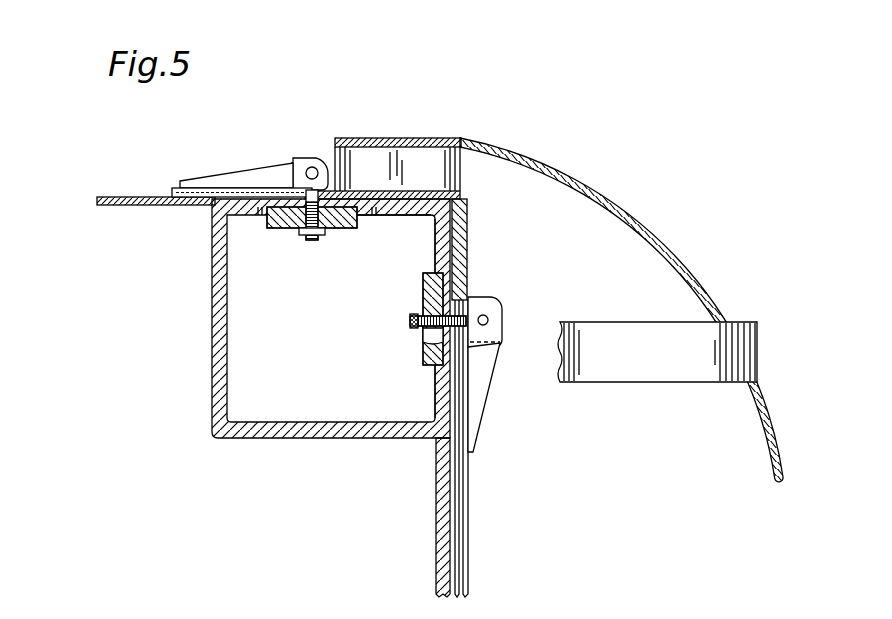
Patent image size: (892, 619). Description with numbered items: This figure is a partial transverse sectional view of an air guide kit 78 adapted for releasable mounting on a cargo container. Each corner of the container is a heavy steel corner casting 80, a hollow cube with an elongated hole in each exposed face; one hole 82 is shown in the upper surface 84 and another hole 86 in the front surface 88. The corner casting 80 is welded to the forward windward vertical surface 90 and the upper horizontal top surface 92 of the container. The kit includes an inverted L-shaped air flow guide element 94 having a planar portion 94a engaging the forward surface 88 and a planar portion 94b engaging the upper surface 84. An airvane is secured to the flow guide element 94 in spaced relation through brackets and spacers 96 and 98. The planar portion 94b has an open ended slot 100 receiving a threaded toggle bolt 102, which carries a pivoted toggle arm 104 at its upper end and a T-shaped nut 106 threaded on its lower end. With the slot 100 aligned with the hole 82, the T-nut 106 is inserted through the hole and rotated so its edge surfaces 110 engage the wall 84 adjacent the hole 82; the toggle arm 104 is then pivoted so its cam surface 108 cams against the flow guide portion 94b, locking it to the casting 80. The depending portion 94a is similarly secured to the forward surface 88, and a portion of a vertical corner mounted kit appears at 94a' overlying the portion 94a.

The air guide kit 78 is at (652, 165).
The corner casting 80 is at (263, 442).
The hole 82 is at (287, 228).
The upper surface 84 is at (386, 218).
The hole 86 is at (424, 348).
The front surface 88 is at (433, 388).
The forward windward vertical surface 90 is at (440, 553).
The upper horizontal top surface 92 is at (121, 206).
The air flow guide element 94 is at (448, 192).
The planar portion 94a is at (499, 249).
The portion of vertical corner mounted air guide kit 94a' is at (504, 448).
The planar portion 94b is at (370, 188).
The bracket and spacer 96 is at (622, 370).
The bracket and spacer 98 is at (423, 163).
The open ended slot 100 is at (180, 191).
The toggle bolt 102 is at (314, 241).
The toggle arm 104 is at (238, 173).
The T-shaped nut 106 is at (290, 236).
The cam surface 108 is at (330, 158).
The edge surfaces 110 is at (248, 214).